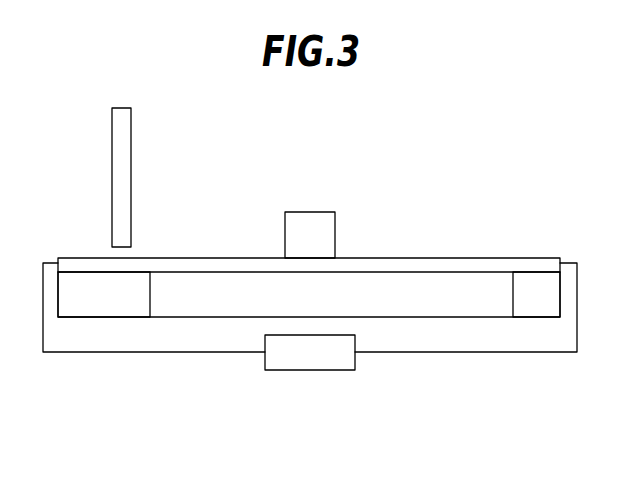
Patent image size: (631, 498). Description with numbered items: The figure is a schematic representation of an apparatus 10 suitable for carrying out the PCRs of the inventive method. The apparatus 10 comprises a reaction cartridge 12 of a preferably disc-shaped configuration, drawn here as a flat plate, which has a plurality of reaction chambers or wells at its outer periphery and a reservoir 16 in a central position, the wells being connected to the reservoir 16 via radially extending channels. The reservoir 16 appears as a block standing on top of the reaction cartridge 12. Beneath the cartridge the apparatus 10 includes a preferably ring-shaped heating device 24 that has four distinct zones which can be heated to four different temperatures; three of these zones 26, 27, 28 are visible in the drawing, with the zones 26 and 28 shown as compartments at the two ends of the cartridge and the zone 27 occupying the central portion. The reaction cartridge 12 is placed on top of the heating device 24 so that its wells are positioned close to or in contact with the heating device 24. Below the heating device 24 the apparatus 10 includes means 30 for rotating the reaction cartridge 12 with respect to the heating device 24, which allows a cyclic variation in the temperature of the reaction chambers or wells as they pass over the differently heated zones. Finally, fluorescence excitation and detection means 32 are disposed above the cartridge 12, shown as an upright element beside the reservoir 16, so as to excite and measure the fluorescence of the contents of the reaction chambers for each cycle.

The apparatus 10 is at (310, 226).
The reaction cartridge 12 is at (440, 241).
The reservoir 16 is at (265, 220).
The heating device 24 is at (546, 331).
The zone 26 is at (88, 297).
The zone 27 is at (413, 290).
The zone 28 is at (538, 292).
The means for rotating the reaction cartridge 30 is at (306, 388).
The fluorescence excitation and detection means 32 is at (120, 142).